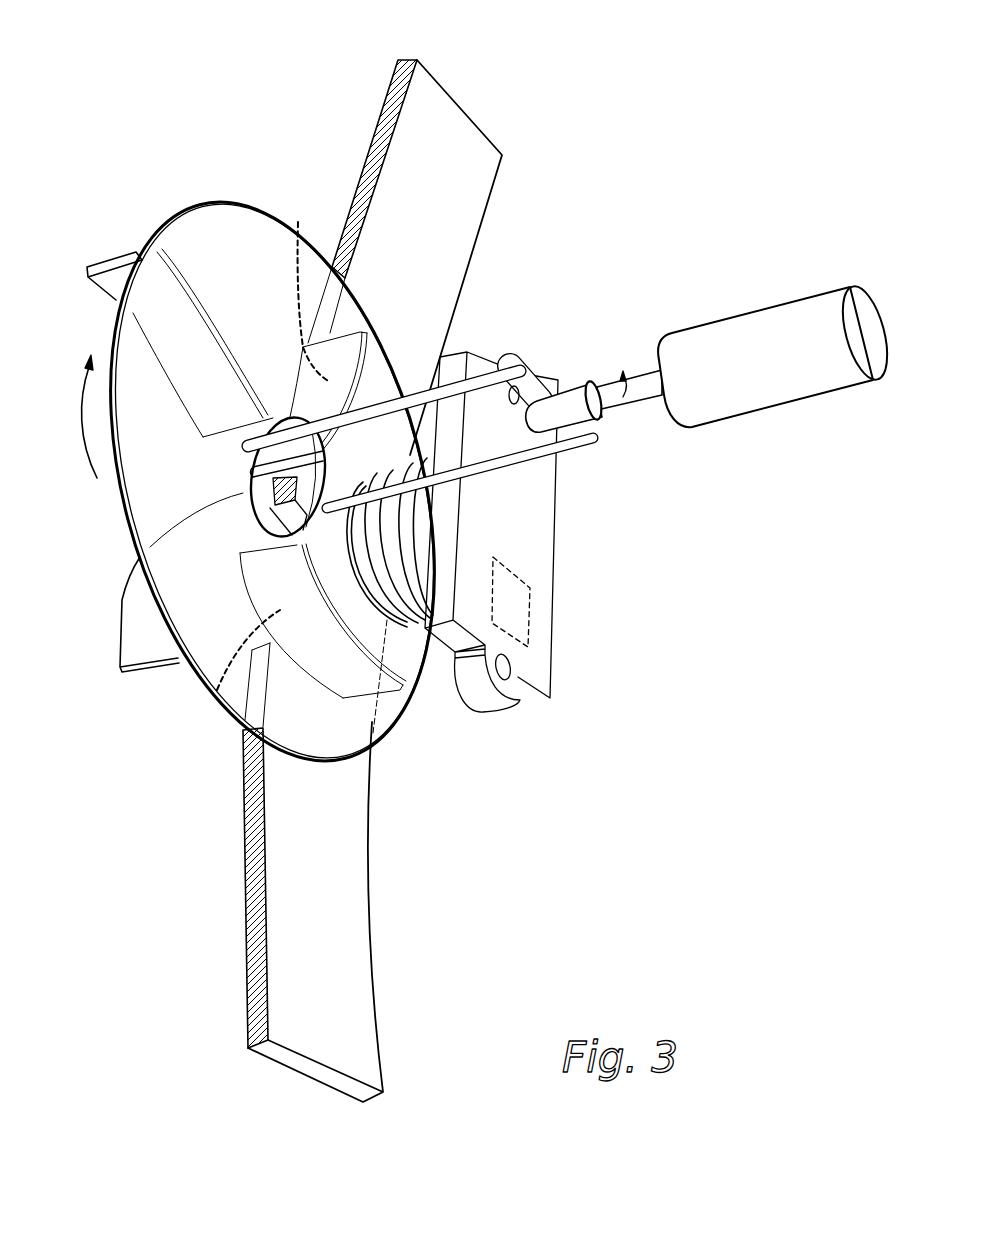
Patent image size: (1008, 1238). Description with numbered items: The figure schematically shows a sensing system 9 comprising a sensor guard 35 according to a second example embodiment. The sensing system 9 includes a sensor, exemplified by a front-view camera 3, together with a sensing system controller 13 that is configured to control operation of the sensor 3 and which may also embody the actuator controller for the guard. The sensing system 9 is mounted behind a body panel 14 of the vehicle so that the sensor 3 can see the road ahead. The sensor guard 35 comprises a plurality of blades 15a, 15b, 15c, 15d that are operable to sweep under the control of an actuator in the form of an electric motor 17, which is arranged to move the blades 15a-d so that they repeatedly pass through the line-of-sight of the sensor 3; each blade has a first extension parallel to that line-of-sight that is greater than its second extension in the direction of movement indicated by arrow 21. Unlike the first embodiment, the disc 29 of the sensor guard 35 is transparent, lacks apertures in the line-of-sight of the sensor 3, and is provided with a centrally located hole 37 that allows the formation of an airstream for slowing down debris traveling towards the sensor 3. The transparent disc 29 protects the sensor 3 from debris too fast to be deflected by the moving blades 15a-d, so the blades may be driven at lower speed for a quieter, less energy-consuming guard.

The sensing system 9 is at (729, 93).
The disc 29 is at (242, 238).
The blade 15a is at (140, 633).
The blade 15b is at (217, 690).
The blade 15c is at (299, 222).
The blade 15d is at (147, 249).
The body panel 14 is at (453, 185).
The sensor guard 35 is at (393, 736).
The centrally located hole 37 is at (305, 422).
The front-view camera 3 is at (560, 513).
The sensing system controller 13 is at (515, 597).
The electric motor 17 is at (767, 392).
The arrow 21 is at (97, 478).